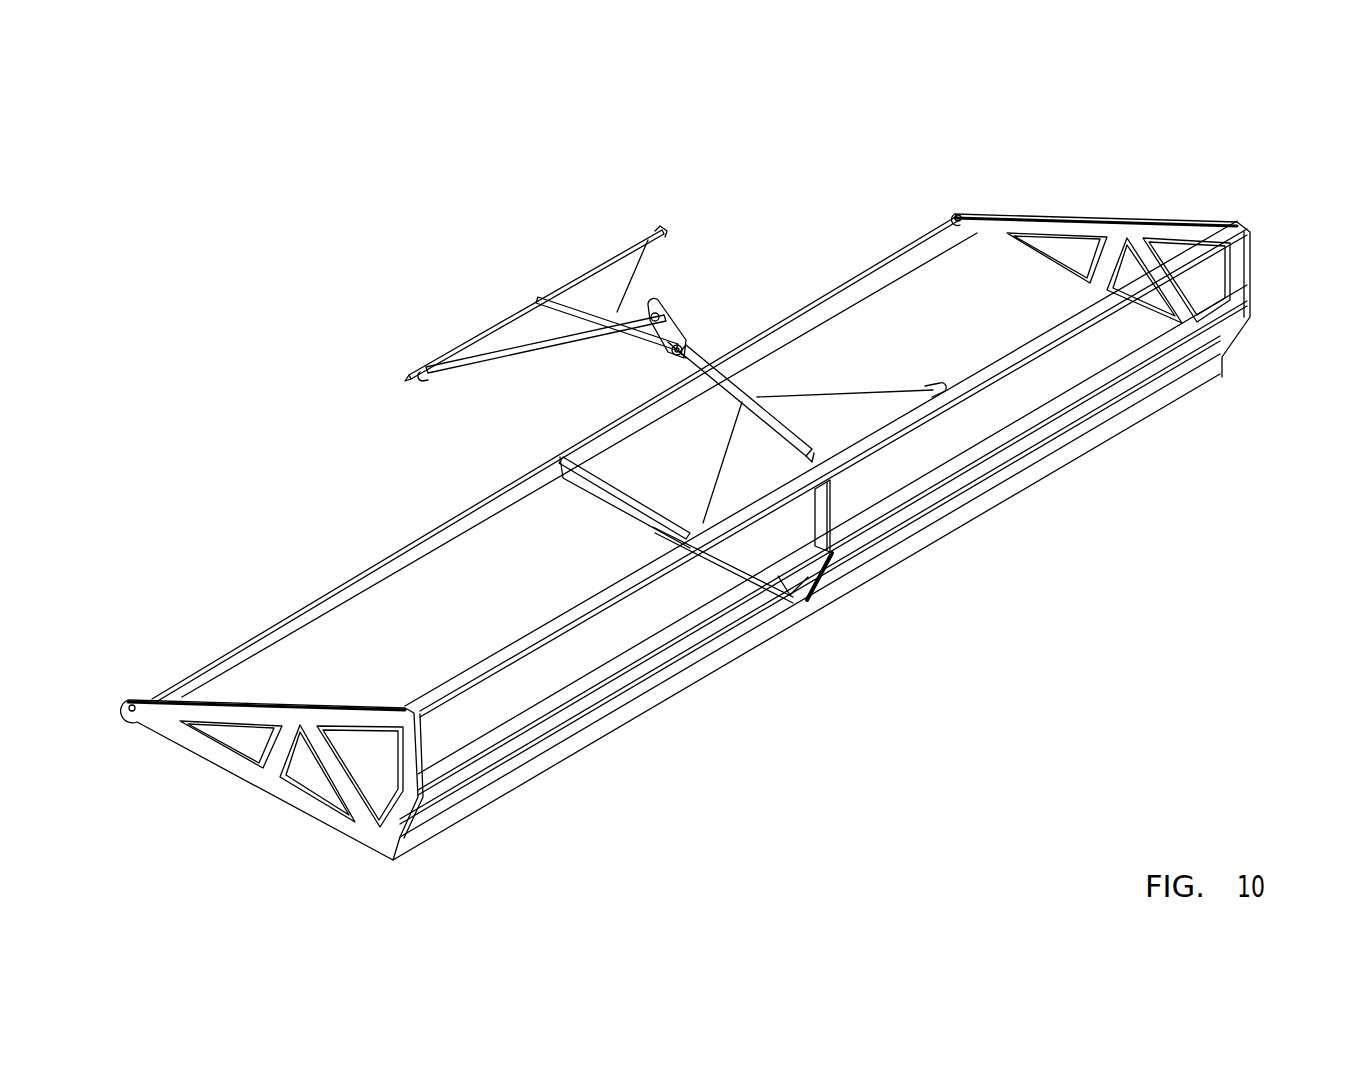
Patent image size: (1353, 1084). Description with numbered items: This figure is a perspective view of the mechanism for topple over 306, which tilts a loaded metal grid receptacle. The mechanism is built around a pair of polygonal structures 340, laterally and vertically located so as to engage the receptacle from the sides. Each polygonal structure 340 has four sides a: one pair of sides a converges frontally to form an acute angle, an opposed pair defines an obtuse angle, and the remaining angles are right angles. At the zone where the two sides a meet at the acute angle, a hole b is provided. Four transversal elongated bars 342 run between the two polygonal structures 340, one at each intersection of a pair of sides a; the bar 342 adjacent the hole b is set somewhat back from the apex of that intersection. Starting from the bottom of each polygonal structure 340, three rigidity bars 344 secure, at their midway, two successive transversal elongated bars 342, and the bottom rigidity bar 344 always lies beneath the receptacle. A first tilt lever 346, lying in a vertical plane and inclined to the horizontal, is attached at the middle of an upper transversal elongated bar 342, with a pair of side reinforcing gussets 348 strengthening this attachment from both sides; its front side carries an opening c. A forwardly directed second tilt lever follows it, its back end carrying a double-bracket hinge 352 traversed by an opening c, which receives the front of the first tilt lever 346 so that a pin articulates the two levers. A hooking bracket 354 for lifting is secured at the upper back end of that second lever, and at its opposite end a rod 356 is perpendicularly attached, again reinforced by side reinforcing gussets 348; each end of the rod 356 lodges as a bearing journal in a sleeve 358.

The mechanism for topple over 306 is at (925, 200).
The polygonal structure 340 is at (314, 772).
The transversal elongated bar 342 is at (375, 580).
The rigidity bar 344 is at (586, 483).
The first tilt lever 346 is at (712, 375).
The side reinforcing gusset 348 is at (585, 290).
The double-bracket hinge 352 is at (670, 335).
The hooking bracket 354 is at (643, 315).
The rod 356 is at (463, 337).
The sleeve 358 is at (410, 370).
The side a is at (222, 708).
The hole b is at (136, 718).
The opening c is at (690, 355).